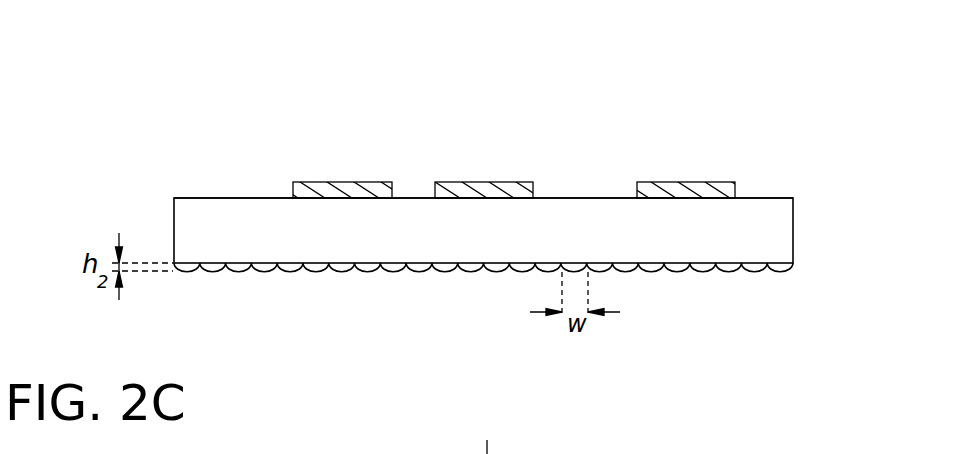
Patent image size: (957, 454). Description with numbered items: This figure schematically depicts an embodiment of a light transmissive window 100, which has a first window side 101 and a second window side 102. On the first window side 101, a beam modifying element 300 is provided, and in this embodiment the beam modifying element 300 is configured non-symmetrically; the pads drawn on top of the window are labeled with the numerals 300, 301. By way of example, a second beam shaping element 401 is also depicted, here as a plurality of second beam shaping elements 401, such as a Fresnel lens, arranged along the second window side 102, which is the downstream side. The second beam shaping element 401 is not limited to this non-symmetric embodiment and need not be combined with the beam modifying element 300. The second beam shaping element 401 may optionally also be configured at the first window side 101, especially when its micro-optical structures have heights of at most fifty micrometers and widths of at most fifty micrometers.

The light transmissive window 100 is at (520, 197).
The first window side 101 is at (195, 198).
The second window side 102 is at (486, 314).
The beam modifying element 300 is at (528, 114).
The conductive pad 301 is at (662, 153).
The second beam shaping element 401 is at (322, 290).